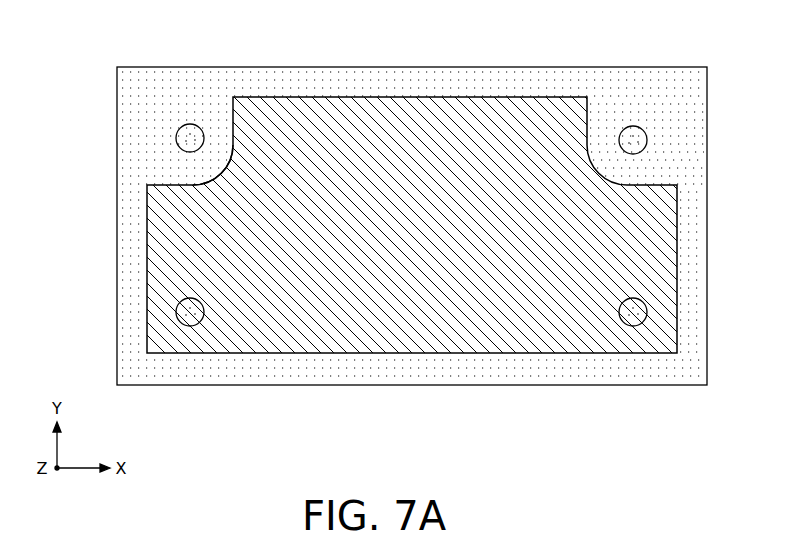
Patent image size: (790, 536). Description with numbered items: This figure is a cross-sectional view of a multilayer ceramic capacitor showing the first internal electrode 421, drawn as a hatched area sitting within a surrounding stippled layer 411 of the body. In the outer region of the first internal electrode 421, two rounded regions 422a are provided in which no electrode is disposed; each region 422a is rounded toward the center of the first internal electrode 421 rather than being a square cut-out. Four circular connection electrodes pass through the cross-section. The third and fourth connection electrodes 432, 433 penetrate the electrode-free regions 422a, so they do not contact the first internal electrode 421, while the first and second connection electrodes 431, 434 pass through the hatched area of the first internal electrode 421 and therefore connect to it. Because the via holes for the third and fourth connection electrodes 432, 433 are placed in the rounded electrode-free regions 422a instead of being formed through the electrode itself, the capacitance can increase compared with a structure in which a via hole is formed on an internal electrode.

The first insulating layer 411 is at (410, 80).
The first internal electrode 421 is at (500, 115).
The region in which an electrode is not disposed 422a is at (218, 141).
The first connection electrode 431 is at (190, 316).
The third connection electrode 432 is at (190, 136).
The fourth connection electrode 433 is at (636, 138).
The second connection electrode 434 is at (635, 314).